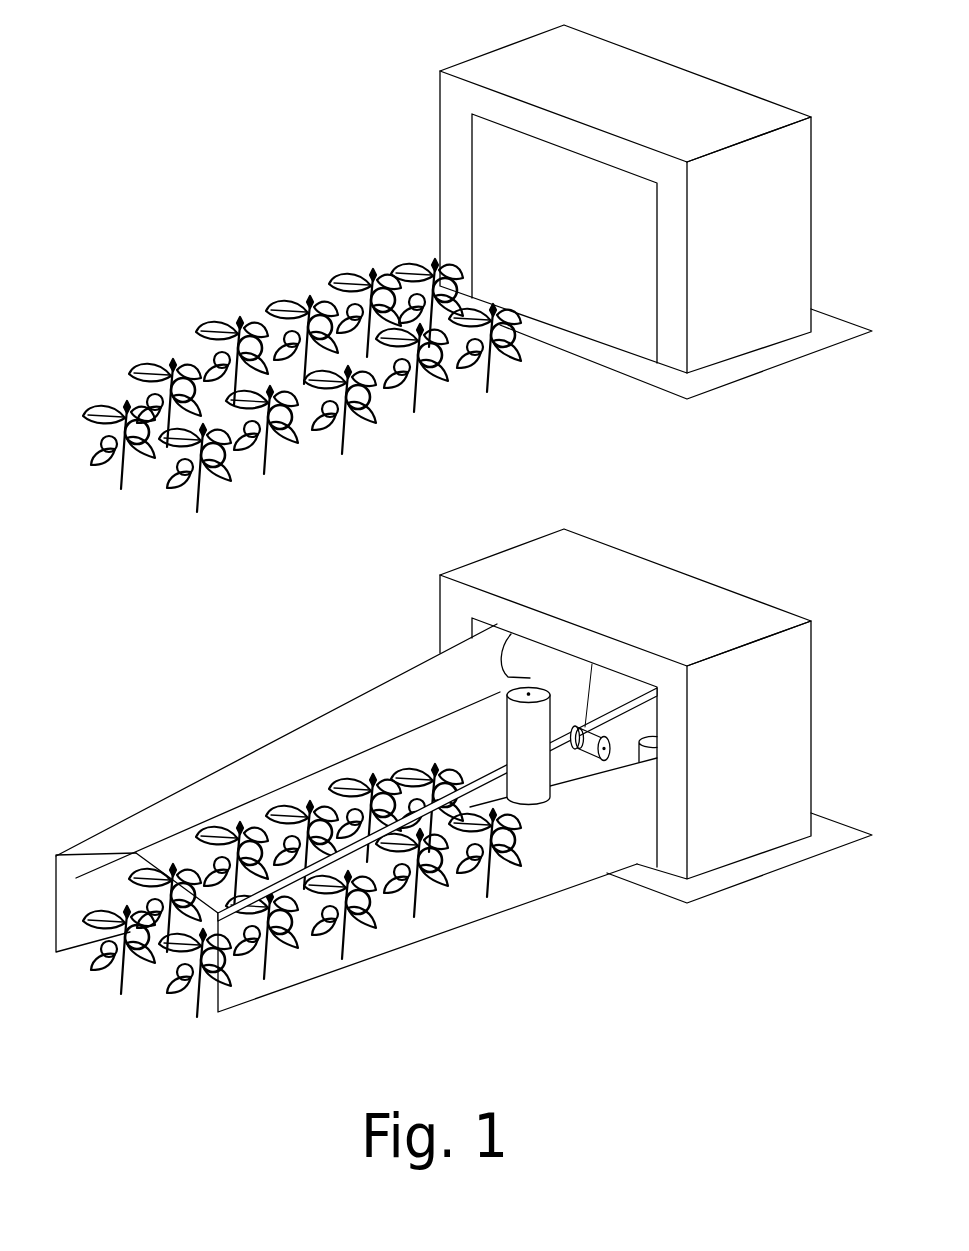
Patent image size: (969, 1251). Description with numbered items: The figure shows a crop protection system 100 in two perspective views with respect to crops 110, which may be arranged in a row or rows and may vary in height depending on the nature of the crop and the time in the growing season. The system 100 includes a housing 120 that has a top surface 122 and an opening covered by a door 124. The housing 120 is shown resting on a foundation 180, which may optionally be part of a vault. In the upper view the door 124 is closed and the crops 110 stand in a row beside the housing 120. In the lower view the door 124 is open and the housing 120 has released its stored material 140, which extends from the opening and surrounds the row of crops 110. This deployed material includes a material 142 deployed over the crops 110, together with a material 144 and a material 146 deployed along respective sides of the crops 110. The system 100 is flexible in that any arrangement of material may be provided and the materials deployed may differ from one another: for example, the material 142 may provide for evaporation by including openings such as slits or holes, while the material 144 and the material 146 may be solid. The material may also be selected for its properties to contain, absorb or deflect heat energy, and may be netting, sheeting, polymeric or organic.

The crop protection system 100 is at (453, 517).
The crops 110 is at (200, 265).
The housing 120 is at (584, 452).
The top surface 122 is at (655, 97).
The door 124 is at (583, 243).
The deployed material 140 is at (346, 818).
The material 142 is at (348, 700).
The material 144 is at (557, 892).
The material 146 is at (56, 890).
The foundation 180 is at (642, 384).